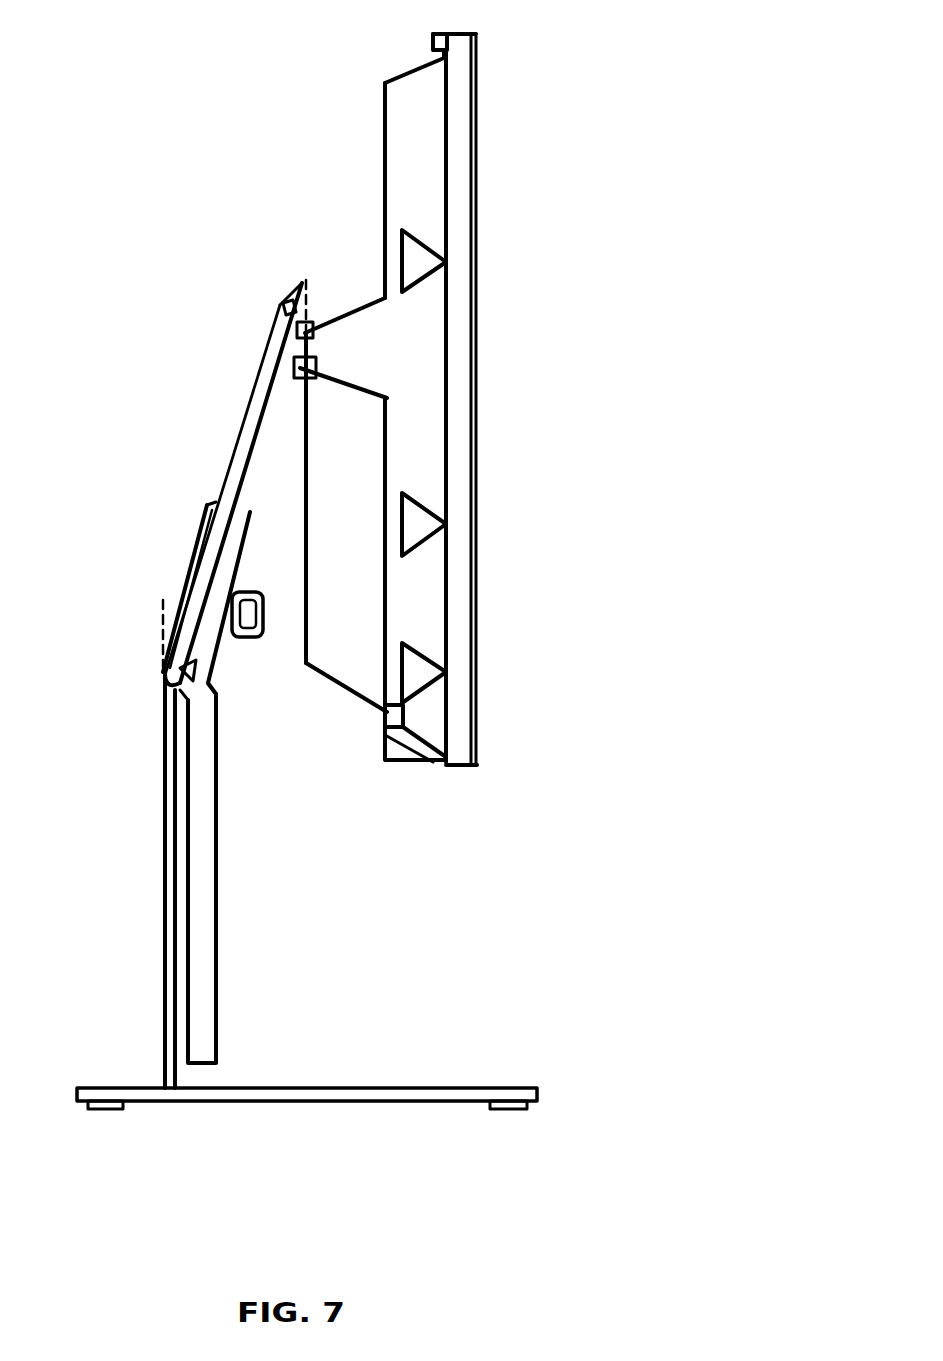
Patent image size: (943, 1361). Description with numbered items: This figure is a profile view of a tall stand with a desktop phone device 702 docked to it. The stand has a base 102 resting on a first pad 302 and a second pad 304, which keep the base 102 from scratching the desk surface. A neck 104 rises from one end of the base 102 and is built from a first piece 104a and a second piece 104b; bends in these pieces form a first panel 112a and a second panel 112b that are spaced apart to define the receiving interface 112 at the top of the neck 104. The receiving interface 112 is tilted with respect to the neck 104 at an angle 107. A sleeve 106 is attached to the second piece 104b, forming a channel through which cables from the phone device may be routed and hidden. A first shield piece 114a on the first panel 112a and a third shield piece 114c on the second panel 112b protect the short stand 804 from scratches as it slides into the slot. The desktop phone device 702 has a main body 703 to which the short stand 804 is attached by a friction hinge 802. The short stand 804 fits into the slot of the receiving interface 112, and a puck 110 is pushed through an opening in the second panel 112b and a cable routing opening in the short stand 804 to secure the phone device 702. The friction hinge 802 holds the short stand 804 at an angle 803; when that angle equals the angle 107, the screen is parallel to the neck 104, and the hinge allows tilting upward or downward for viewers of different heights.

The desktop phone device 702 is at (294, 126).
The main body 703 is at (458, 33).
The angle 803 is at (298, 286).
The friction hinge 802 is at (297, 333).
The short stand 804 is at (258, 398).
The receiving interface 112 is at (201, 573).
The first panel 112a is at (205, 528).
The second panel 112b is at (242, 545).
The first shield piece 114a is at (200, 578).
The third shield piece 114c is at (238, 527).
The angle 107 is at (164, 626).
The puck 110 is at (250, 641).
The neck 104 is at (115, 882).
The first piece 104a is at (165, 808).
The second piece 104b is at (180, 770).
The sleeve 106 is at (207, 812).
The base 102 is at (206, 1086).
The first pad 302 is at (105, 1109).
The second pad 304 is at (510, 1109).